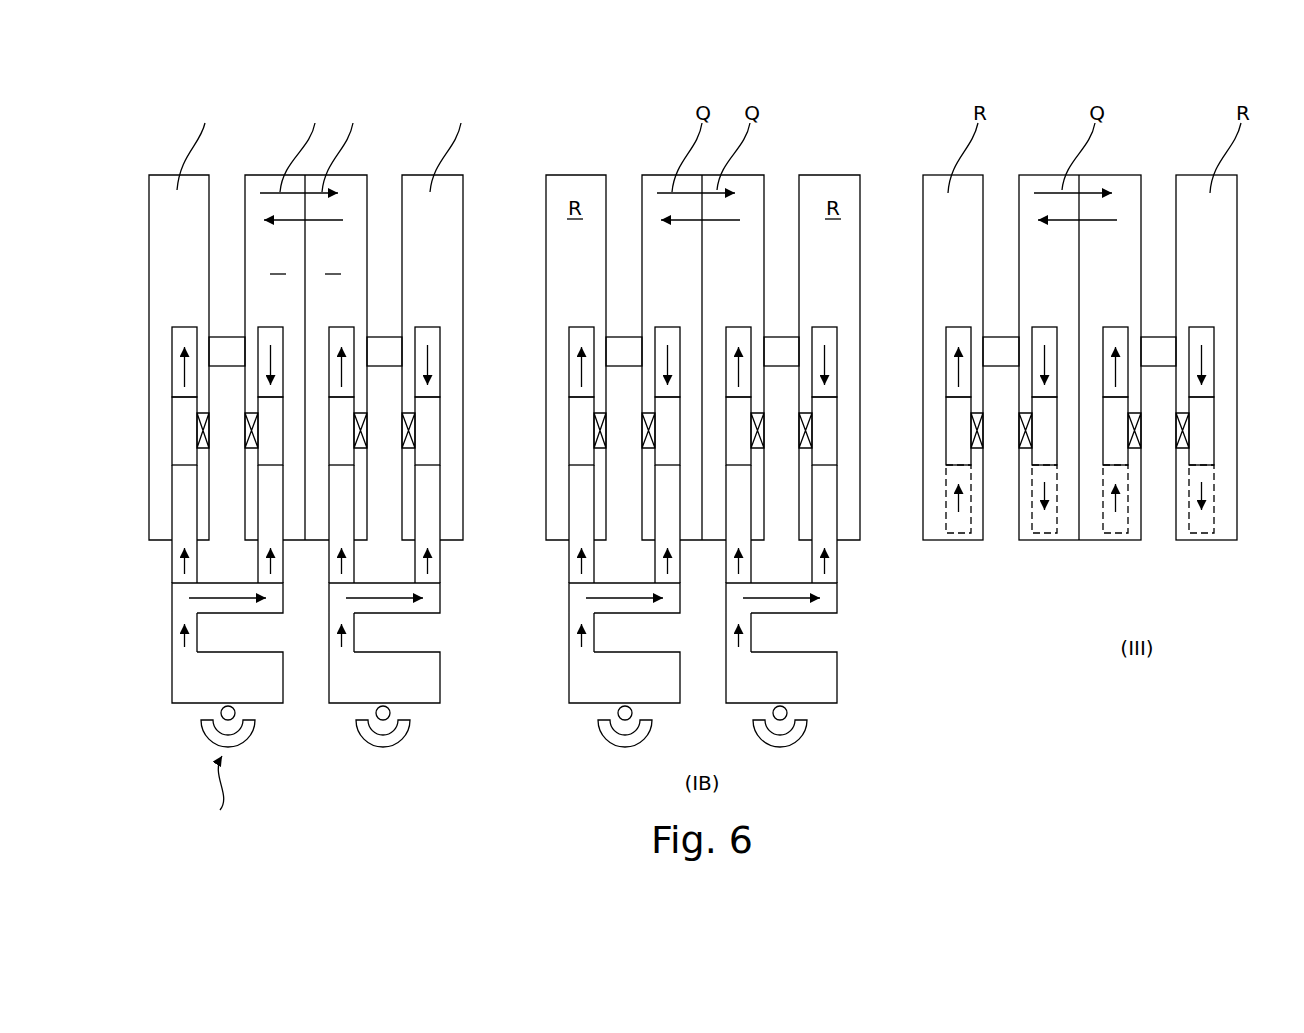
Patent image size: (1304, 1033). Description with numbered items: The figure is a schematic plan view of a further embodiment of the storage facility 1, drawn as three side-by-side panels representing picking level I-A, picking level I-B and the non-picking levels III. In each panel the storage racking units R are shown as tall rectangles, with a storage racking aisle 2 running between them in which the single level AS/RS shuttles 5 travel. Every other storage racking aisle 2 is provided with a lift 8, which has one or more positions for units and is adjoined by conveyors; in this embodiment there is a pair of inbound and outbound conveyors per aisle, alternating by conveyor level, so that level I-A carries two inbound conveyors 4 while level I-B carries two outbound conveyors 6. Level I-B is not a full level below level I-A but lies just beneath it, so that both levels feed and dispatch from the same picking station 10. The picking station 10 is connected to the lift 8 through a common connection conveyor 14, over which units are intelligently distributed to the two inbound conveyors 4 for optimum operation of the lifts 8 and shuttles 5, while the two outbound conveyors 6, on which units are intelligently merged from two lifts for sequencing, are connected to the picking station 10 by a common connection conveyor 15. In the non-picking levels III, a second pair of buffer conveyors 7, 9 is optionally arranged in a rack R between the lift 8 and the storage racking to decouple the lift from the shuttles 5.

The storage facility 1 is at (137, 110).
The storage racking aisle 2 is at (221, 228).
The inbound conveyor 4 is at (265, 482).
The single level AS/RS 5 is at (692, 351).
The outbound conveyor 6 is at (678, 578).
The inbound buffer conveyor 7 is at (1113, 333).
The lift 8 is at (180, 410).
The outbound buffer conveyor 9 is at (1205, 335).
The picking station 10 is at (183, 678).
The common connection conveyor 14 is at (172, 640).
The common connection conveyor 15 is at (575, 635).